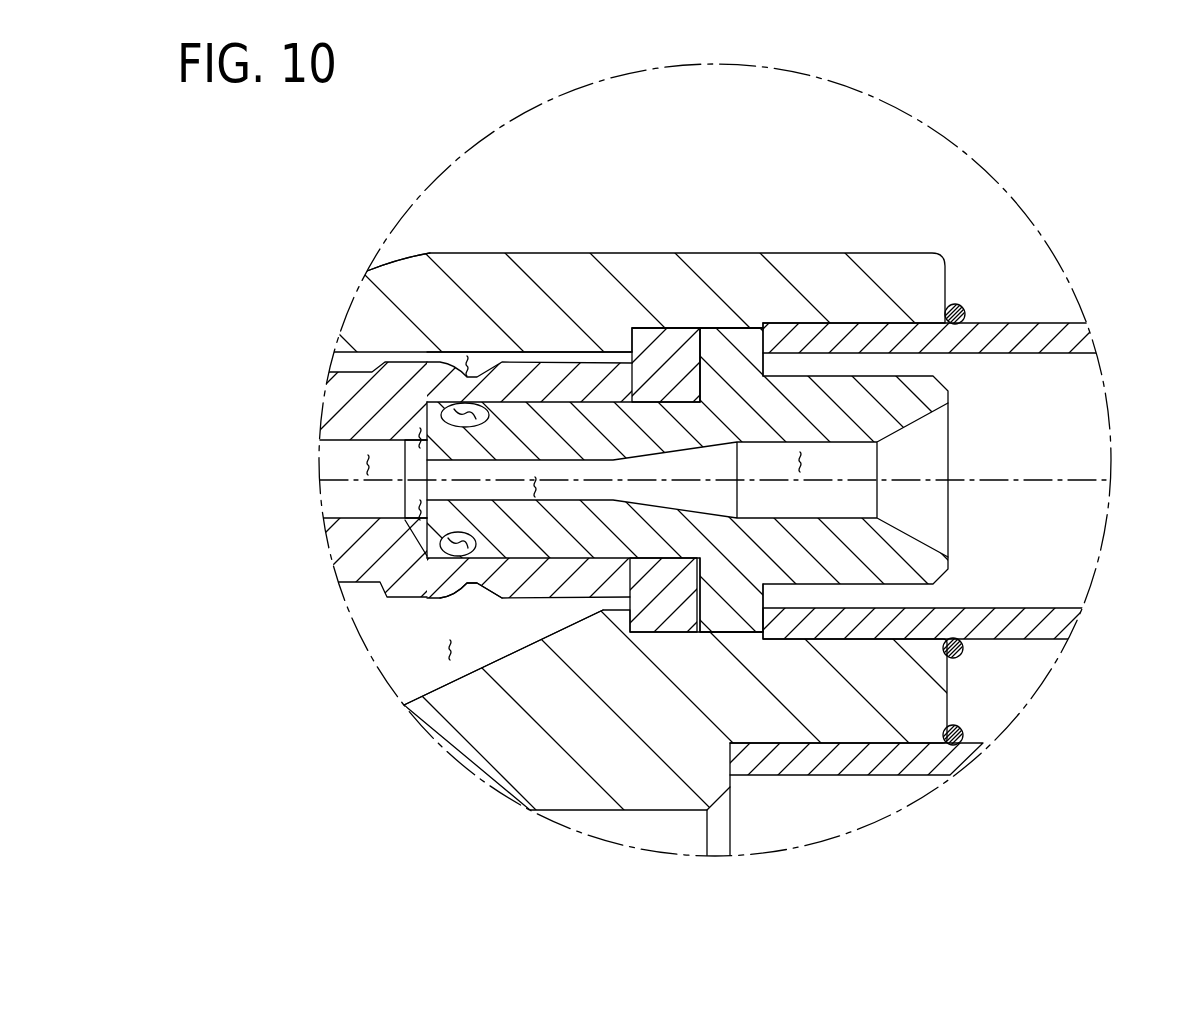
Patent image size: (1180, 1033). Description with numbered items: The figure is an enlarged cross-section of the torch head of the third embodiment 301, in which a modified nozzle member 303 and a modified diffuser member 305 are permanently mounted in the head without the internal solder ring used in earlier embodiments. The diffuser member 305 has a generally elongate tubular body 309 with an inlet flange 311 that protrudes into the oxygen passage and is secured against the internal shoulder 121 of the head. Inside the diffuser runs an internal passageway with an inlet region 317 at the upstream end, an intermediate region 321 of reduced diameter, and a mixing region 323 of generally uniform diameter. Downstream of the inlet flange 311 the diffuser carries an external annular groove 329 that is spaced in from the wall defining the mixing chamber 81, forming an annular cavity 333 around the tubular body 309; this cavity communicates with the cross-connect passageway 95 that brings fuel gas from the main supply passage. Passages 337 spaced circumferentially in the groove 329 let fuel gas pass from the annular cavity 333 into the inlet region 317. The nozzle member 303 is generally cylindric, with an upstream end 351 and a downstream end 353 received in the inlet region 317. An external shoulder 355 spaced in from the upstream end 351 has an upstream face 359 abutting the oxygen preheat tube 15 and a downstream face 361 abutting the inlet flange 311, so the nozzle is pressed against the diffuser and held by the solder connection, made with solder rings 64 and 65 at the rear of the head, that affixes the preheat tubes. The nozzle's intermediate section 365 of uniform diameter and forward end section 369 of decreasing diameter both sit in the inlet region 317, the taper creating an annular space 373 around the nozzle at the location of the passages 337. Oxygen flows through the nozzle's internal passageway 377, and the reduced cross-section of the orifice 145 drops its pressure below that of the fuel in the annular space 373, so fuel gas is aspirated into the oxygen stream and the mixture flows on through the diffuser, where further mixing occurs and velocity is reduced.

The torch head of third embodiment 301 is at (744, 236).
The diffuser member 305 is at (508, 335).
The forward end section 369 is at (430, 253).
The annular cavity 333 is at (467, 365).
The passages 337 is at (447, 398).
The downstream end 353 is at (420, 428).
The intermediate region 321 is at (408, 437).
The mixing region 323 is at (363, 465).
The inlet region 317 is at (417, 510).
The external annular groove 329 is at (460, 590).
The annular space 373 is at (467, 600).
The cross-connect passageway 95 is at (447, 657).
The orifice passageway 145 is at (540, 640).
The tubular body 309 is at (537, 500).
The intermediate section 365 is at (622, 603).
The downstream face 361 is at (705, 603).
The nozzle member 303 is at (800, 567).
The solder ring 65 is at (960, 733).
The oxygen preheat tube 15 is at (1071, 620).
The upstream end 351 is at (950, 565).
The internal passageway 377 is at (805, 467).
The solder ring 64 is at (967, 307).
The upstream face 359 is at (810, 353).
The external shoulder 355 is at (723, 353).
The inlet flange 311 is at (673, 337).
The internal shoulder 121 is at (636, 338).
The mixing chamber 81 is at (548, 357).